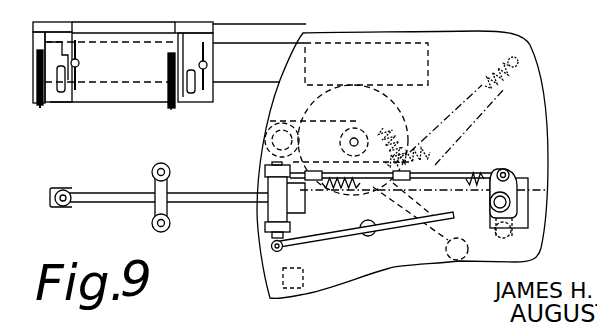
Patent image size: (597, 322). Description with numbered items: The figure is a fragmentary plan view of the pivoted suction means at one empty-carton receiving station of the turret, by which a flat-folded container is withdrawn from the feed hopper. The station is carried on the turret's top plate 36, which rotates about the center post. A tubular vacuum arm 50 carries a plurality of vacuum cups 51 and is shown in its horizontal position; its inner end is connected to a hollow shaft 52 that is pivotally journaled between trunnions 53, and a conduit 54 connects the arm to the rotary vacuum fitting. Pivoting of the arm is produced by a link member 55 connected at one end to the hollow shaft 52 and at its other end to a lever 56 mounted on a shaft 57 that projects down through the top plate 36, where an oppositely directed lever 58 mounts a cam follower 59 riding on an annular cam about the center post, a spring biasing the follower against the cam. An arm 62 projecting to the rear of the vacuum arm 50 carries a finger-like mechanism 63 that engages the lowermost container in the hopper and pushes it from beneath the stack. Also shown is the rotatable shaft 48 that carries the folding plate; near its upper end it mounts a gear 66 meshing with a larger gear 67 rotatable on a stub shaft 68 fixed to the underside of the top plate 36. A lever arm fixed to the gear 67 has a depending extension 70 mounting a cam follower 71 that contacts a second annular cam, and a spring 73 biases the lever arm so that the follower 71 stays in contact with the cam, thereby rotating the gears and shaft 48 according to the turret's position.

The top plate 36 is at (482, 32).
The rotatable shaft 48 is at (287, 132).
The tubular vacuum arm 50 is at (181, 191).
The vacuum cups 51 is at (163, 167).
The hollow shaft 52 is at (296, 213).
The trunnions 53 is at (265, 171).
The conduit 54 is at (333, 233).
The link member 55 is at (453, 174).
The lever 56 is at (512, 187).
The shaft 57 is at (518, 202).
The oppositely directed lever 58 is at (507, 220).
The cam follower 59 is at (508, 235).
The arm 62 is at (234, 52).
The finger-like mechanism 63 is at (40, 108).
The gear 66 is at (268, 128).
The larger gear 67 is at (392, 108).
The stub shaft 68 is at (355, 133).
The depending extension 70 is at (437, 239).
The cam follower 71 is at (457, 262).
The spring 73 is at (482, 112).